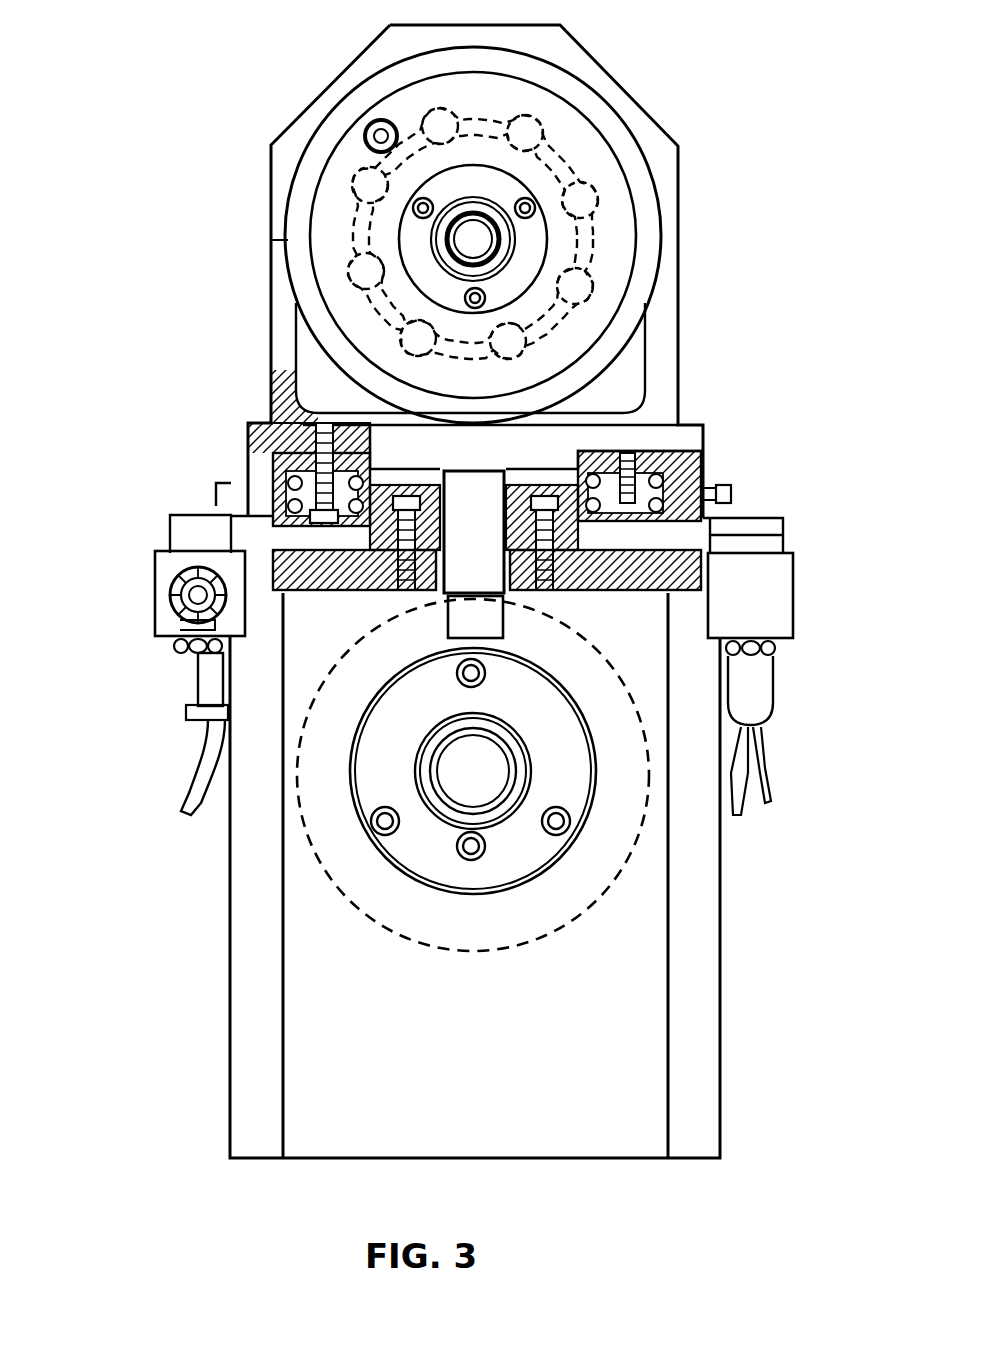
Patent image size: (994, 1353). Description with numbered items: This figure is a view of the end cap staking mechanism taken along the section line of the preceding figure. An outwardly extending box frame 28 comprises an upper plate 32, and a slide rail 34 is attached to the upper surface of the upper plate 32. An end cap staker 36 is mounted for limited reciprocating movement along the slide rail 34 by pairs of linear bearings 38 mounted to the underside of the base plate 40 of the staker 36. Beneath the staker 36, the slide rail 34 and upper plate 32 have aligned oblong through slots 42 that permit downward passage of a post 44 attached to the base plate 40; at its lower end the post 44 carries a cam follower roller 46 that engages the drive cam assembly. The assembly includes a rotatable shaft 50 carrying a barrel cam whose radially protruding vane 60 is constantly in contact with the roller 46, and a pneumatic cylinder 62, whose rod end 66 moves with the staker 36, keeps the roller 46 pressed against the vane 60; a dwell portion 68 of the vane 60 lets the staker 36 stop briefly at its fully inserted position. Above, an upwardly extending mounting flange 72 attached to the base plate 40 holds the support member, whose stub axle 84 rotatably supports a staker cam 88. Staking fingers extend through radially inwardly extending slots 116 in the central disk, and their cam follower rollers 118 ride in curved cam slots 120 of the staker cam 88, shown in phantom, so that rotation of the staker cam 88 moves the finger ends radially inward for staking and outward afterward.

The box frame 28 is at (432, 1082).
The upper plate 32 is at (580, 547).
The slide rail 34 is at (700, 456).
The end cap staker 36 is at (684, 186).
The linear bearing 38 is at (300, 475).
The base plate 40 is at (556, 434).
The oblong through slot 42 is at (510, 592).
The post 44 is at (458, 555).
The cam follower roller 46 is at (458, 618).
The shaft 50 is at (478, 788).
The vane 60 is at (633, 842).
The pneumatic cylinder 62 is at (170, 590).
The rod end 66 is at (185, 523).
The dwell portion 68 is at (330, 592).
The mounting flange 72 is at (651, 146).
The stub axle 84 is at (478, 238).
The staker cam 88 is at (560, 120).
The slot 116 is at (590, 330).
The cam follower roller 118 is at (600, 292).
The cam slot 120 is at (598, 210).